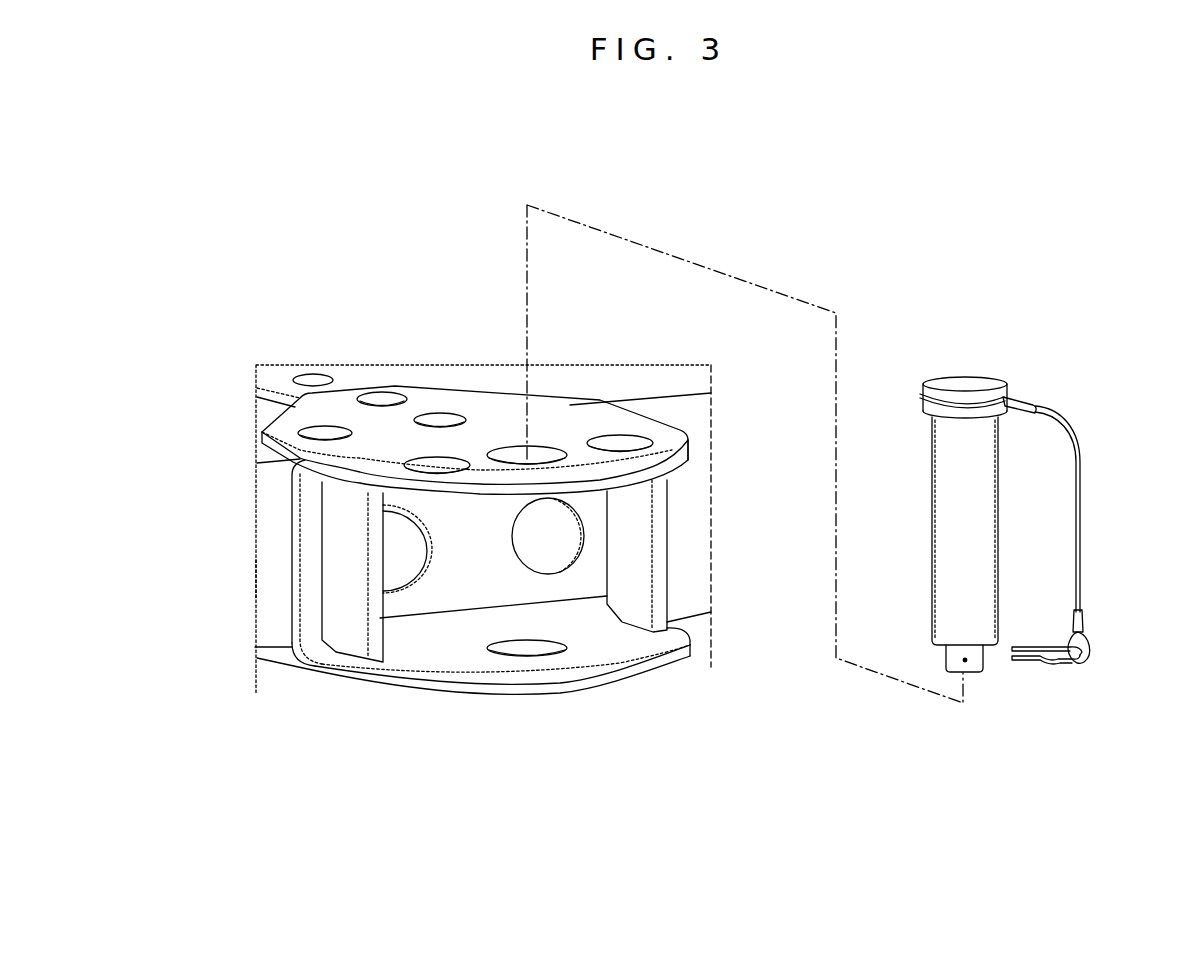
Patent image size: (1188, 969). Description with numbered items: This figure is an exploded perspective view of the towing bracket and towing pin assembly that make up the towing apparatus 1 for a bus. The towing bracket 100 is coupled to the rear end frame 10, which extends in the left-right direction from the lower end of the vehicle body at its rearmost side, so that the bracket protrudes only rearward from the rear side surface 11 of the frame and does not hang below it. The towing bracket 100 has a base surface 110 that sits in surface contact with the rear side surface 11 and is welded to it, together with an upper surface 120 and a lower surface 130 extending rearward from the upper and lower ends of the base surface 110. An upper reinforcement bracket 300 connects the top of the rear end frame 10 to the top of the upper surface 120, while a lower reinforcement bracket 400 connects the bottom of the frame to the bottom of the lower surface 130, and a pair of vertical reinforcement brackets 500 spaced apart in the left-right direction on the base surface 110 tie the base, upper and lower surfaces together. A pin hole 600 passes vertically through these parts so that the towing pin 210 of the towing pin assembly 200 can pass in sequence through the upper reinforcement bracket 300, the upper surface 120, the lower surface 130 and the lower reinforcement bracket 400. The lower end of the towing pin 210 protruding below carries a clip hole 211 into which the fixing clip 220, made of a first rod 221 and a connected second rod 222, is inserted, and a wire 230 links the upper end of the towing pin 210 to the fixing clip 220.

The towing apparatus 1 is at (472, 391).
The rear end frame 10 is at (277, 537).
The rear side surface 11 is at (268, 577).
The towing bracket 100 is at (484, 614).
The base surface 110 is at (484, 553).
The upper surface 120 is at (685, 462).
The lower surface 130 is at (448, 653).
The upper reinforcement bracket 300 is at (347, 410).
The lower reinforcement bracket 400 is at (408, 700).
The vertical reinforcement bracket 500 is at (338, 608).
The pin hole 600 is at (510, 446).
The towing pin assembly 200 is at (1046, 534).
The towing pin 210 is at (966, 383).
The clip hole 211 is at (966, 662).
The fixing clip 220 is at (1067, 666).
The first rod 221 is at (1030, 648).
The second rod 222 is at (1033, 662).
The wire 230 is at (1082, 513).